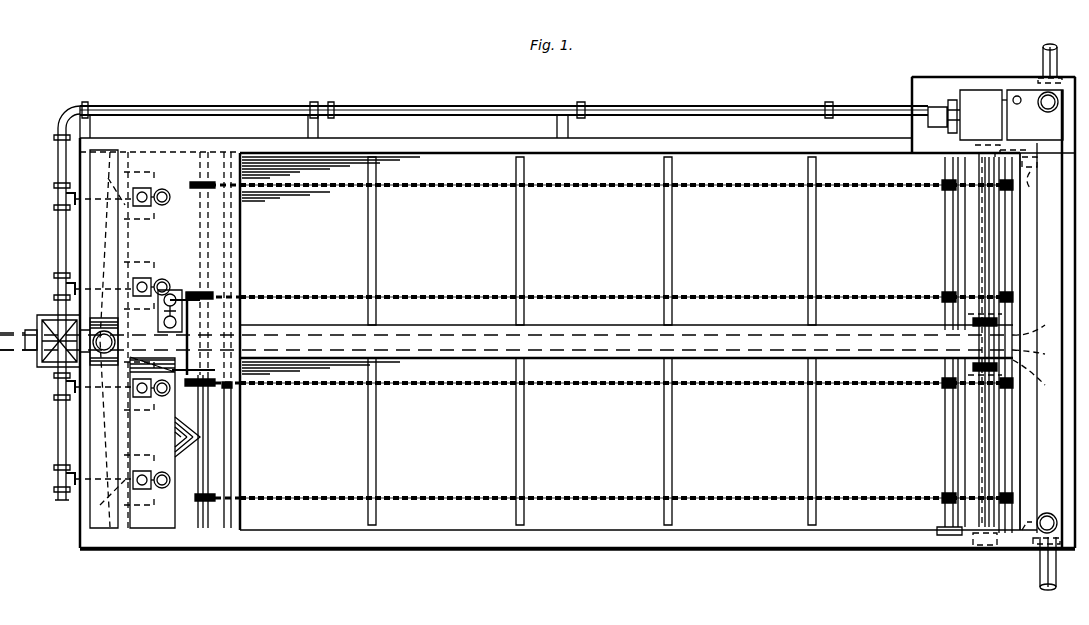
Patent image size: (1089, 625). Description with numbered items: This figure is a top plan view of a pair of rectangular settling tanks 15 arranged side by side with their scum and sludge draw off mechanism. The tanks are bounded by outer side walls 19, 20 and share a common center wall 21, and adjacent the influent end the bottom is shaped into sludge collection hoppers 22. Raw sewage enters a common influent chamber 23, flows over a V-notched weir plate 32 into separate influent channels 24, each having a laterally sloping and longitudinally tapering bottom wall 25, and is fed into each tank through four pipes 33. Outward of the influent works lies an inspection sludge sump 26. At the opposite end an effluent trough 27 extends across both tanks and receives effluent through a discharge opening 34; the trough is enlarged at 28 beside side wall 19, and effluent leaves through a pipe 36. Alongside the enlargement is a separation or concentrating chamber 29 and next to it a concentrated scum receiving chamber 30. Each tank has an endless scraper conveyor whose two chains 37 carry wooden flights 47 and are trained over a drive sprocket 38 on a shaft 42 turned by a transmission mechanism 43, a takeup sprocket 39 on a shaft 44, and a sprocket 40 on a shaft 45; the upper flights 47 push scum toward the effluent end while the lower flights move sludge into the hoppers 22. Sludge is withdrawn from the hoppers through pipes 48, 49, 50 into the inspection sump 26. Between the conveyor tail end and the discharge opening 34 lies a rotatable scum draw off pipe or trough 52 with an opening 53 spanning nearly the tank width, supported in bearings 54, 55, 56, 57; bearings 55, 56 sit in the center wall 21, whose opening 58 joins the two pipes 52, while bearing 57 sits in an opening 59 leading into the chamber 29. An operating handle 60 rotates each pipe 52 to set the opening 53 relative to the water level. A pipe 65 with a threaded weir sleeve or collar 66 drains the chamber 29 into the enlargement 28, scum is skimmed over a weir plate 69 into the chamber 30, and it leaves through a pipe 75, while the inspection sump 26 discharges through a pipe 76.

The settling tank 15 is at (578, 254).
The outer side wall 19 is at (708, 150).
The outer side wall 20 is at (712, 548).
The common center wall 21 is at (716, 327).
The sludge collection hopper 22 is at (175, 405).
The influent chamber 23 is at (92, 325).
The influent channel 24 is at (100, 160).
The sloping and tapering bottom wall 25 is at (108, 178).
The inspection sludge sump 26 is at (37, 320).
The effluent trough 27 is at (1039, 341).
The effluent trough enlargement 28 is at (1035, 115).
The separation or concentrating chamber 29 is at (981, 115).
The concentrated scum receiving chamber 30 is at (935, 110).
The V-notched weir plate 32 is at (100, 318).
The pipe 33 is at (146, 262).
The discharge opening 34 is at (1030, 178).
The pipe 36 is at (1043, 58).
The chain 37 is at (735, 188).
The drive sprocket 38 is at (195, 184).
The sprocket 39 is at (945, 190).
The sprocket 40 is at (1010, 188).
The shaft 42 is at (210, 452).
The transmission mechanism 43 is at (172, 290).
The shaft 44 is at (945, 252).
The shaft 45 is at (1012, 245).
The wooden flight 47 is at (378, 258).
The pipe 48 is at (165, 203).
The pipe 49 is at (70, 204).
The pipe 50 is at (58, 242).
The scum draw off pipe or trough 52 is at (1000, 278).
The opening 53 is at (980, 243).
The bearing 54 is at (978, 545).
The bearing 55 is at (1035, 372).
The bearing 56 is at (1035, 328).
The bearing 57 is at (1025, 158).
The opening 58 is at (1035, 347).
The opening 59 is at (975, 149).
The operating handle 60 is at (975, 320).
The pipe 65 is at (1002, 100).
The threaded weir sleeve or collar 66 is at (1017, 96).
The weir plate 69 is at (946, 107).
The pipe 75 is at (651, 110).
The pipe 76 is at (12, 355).